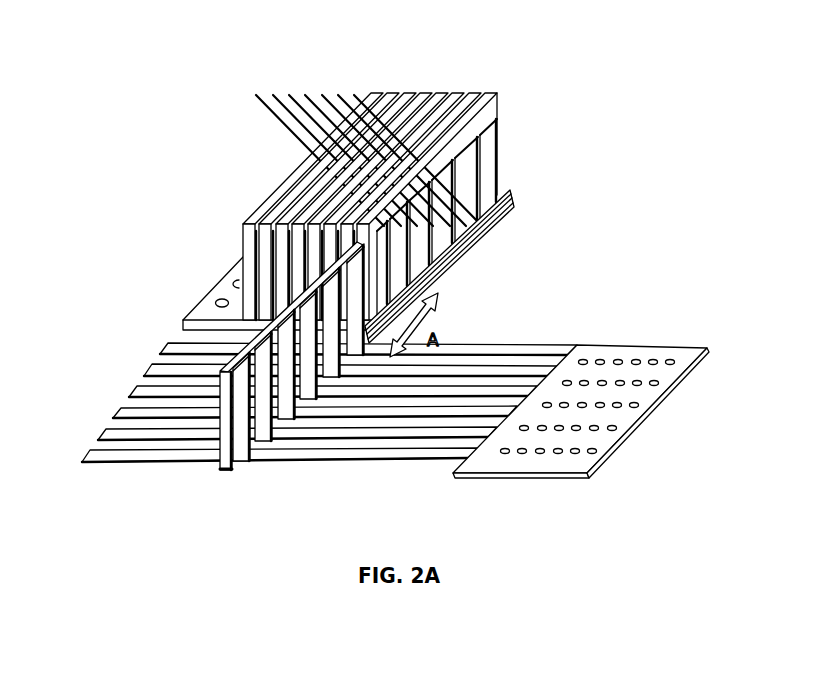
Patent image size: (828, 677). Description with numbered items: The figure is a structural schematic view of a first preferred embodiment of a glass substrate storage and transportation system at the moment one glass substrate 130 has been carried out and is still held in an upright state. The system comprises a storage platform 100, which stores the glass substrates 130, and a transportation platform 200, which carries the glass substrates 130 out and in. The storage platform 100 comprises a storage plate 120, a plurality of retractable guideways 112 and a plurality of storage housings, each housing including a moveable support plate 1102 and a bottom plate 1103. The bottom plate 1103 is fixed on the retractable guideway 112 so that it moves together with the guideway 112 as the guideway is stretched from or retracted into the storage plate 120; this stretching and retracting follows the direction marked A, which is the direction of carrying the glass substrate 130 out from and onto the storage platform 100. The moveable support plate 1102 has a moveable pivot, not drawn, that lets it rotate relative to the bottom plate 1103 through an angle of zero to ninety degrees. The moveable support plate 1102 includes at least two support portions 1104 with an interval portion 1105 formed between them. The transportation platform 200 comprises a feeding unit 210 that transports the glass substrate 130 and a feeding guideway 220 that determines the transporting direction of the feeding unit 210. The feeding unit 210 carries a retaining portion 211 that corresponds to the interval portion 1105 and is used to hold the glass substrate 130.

The storage platform 100 is at (341, 211).
The storage plate 120 is at (210, 312).
The glass substrate 130 is at (255, 222).
The moveable support plate 1102 is at (493, 183).
The retractable guideway 112 is at (410, 285).
The bottom plate 1103 is at (218, 470).
The support portion 1104 is at (242, 437).
The interval portion 1105 is at (250, 425).
The transportation platform 200 is at (381, 421).
The feeding unit 210 is at (593, 411).
The retaining portion 211 is at (632, 405).
The feeding guideway 220 is at (375, 460).